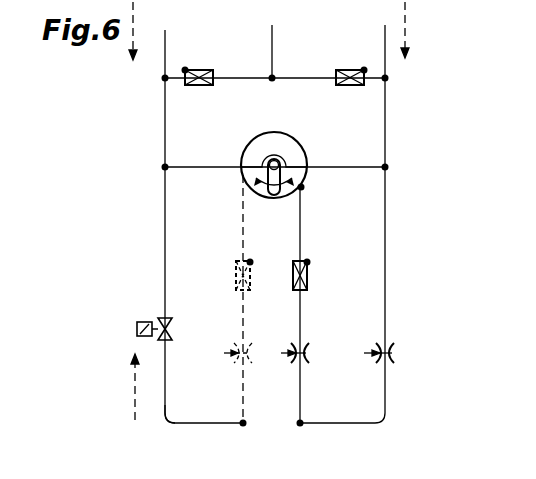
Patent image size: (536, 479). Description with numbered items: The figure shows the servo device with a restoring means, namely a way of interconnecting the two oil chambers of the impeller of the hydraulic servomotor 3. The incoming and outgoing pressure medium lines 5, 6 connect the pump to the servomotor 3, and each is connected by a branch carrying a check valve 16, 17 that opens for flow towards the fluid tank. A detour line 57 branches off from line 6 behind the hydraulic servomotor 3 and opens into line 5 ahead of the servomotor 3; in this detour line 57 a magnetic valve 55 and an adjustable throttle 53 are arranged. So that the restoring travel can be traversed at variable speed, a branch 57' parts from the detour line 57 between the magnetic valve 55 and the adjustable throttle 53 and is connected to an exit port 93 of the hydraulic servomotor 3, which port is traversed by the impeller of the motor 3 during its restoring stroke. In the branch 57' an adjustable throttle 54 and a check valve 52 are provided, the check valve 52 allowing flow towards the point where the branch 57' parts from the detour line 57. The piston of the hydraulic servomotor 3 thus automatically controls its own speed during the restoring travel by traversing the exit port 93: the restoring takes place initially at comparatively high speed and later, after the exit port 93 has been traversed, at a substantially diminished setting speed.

The hydraulic servomotor 3 is at (333, 184).
The pressure medium line 5 is at (388, 136).
The pressure medium line 6 is at (163, 136).
The check valve 16 is at (366, 83).
The check valve 17 is at (162, 80).
The check valve 52 is at (309, 275).
The adjustable throttle 53 is at (396, 358).
The adjustable throttle 54 is at (311, 360).
The magnetic valve 55 is at (160, 320).
The detour line 57 is at (148, 432).
The branch 57' is at (326, 329).
The exit port 93 is at (303, 191).